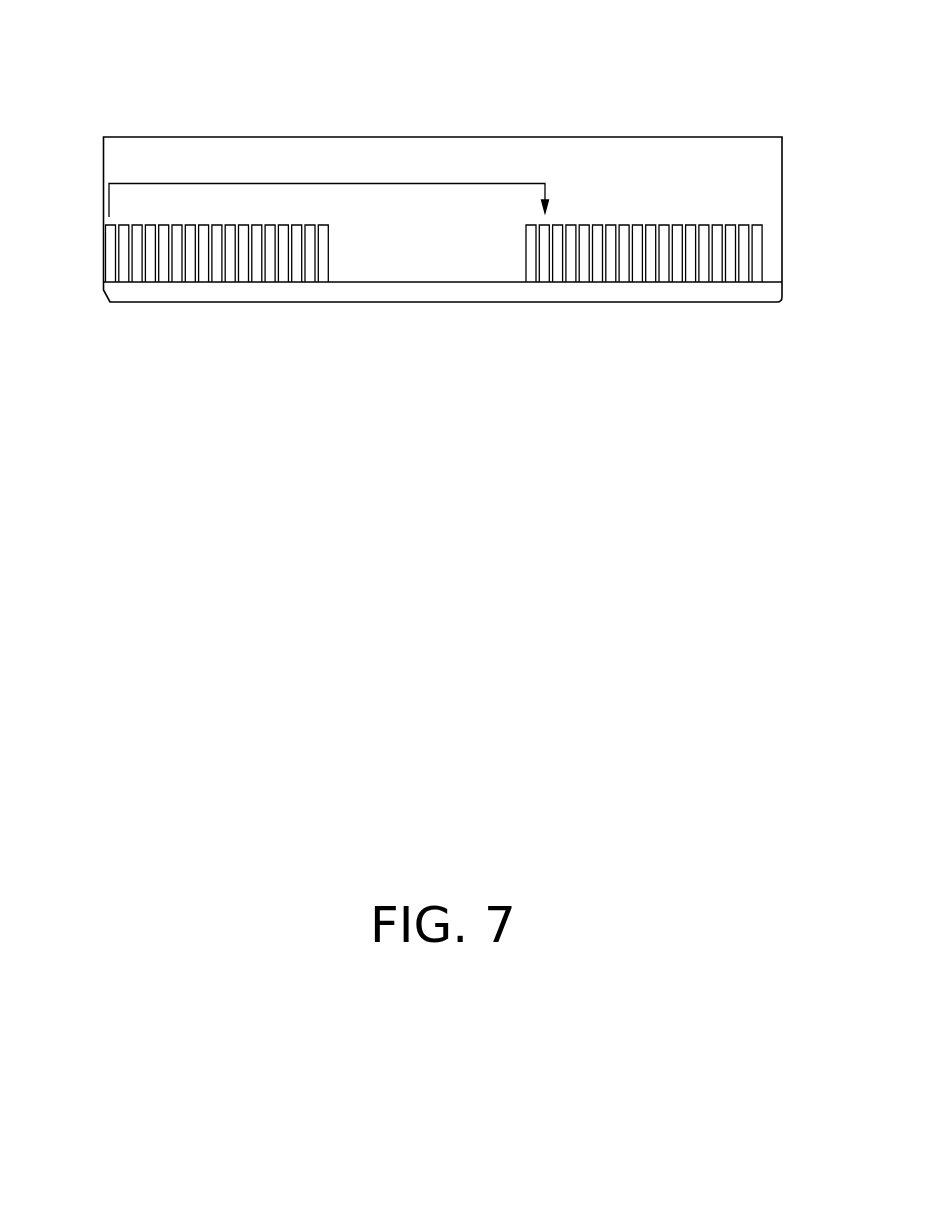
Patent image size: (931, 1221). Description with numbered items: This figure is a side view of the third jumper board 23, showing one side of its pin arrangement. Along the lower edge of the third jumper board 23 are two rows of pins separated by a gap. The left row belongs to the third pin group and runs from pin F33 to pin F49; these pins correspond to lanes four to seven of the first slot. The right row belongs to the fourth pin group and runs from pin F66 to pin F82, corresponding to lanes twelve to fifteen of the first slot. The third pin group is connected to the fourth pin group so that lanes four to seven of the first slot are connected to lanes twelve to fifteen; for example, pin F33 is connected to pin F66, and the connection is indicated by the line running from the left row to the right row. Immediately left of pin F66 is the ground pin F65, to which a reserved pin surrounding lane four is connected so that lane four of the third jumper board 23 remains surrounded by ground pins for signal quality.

The third jumper board 23 is at (414, 155).
The pin F33 of the third pin group F33 is at (110, 267).
The pin F49 of the third pin group F49 is at (320, 262).
The ground pin F65 is at (530, 260).
The pin F66 of the fourth pin group F66 is at (542, 270).
The pin F82 of the fourth pin group F82 is at (760, 257).